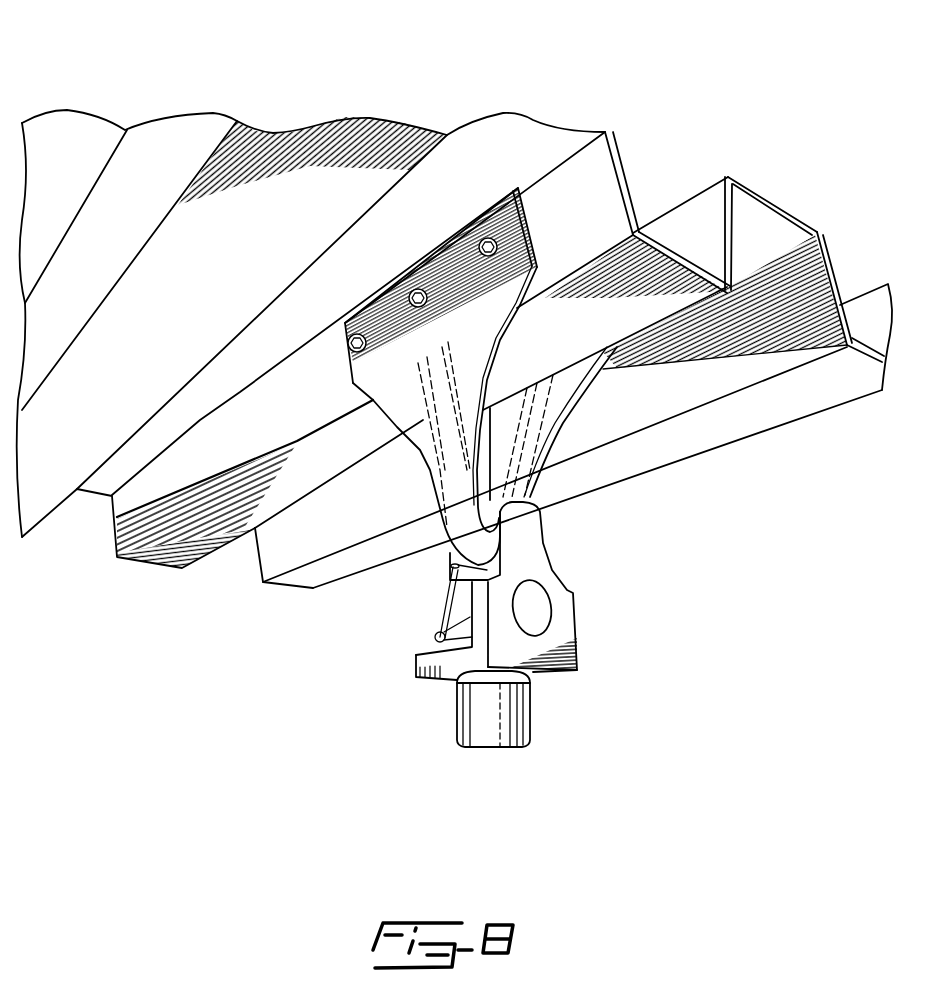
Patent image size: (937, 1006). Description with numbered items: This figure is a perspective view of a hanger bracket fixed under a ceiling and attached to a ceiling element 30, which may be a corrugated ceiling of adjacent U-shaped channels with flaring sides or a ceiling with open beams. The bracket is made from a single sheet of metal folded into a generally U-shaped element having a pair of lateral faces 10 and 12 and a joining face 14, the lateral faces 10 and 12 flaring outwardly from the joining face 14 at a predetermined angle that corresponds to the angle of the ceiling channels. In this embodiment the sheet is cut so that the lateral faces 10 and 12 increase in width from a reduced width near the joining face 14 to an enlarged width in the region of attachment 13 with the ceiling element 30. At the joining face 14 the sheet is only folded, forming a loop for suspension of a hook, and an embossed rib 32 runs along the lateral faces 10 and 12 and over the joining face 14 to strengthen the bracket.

The lateral face 10 is at (422, 419).
The lateral face 12 is at (570, 393).
The region of attachment 13 is at (505, 217).
The joining face 14 is at (446, 577).
The ceiling element 30 is at (643, 287).
The embossed rib 32 is at (457, 508).